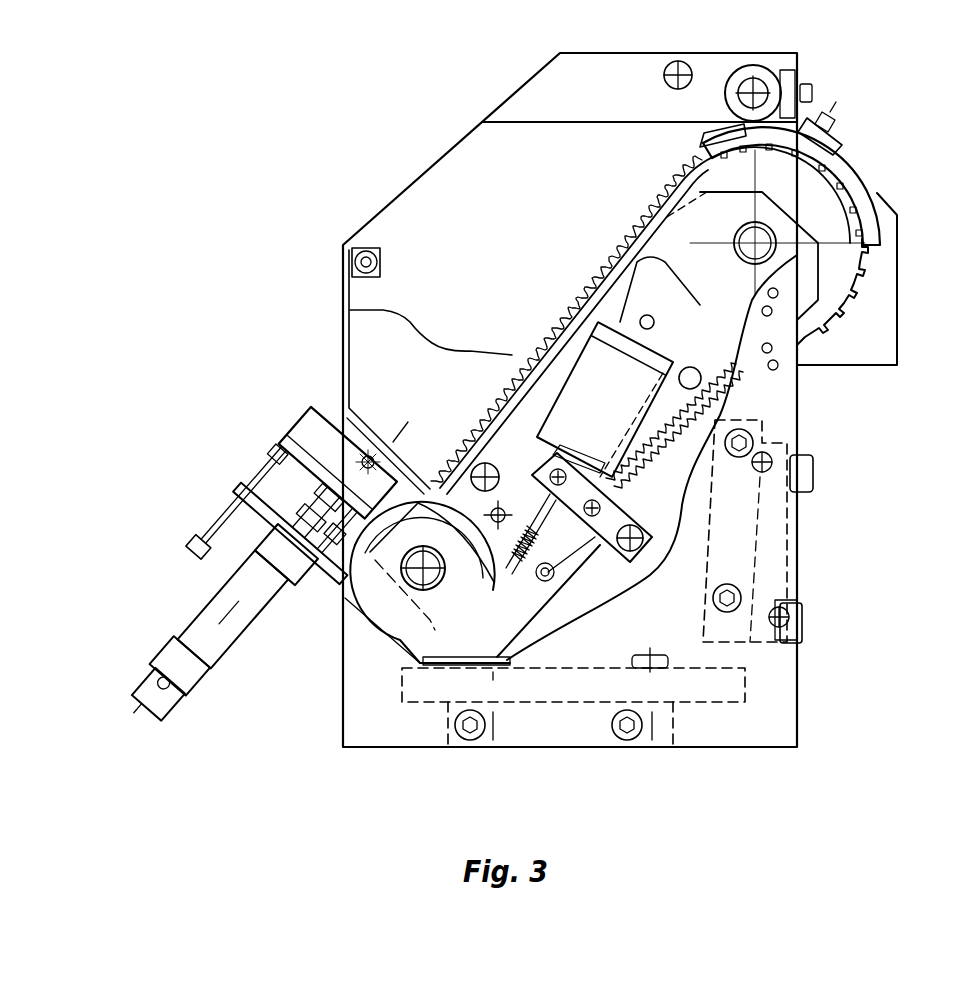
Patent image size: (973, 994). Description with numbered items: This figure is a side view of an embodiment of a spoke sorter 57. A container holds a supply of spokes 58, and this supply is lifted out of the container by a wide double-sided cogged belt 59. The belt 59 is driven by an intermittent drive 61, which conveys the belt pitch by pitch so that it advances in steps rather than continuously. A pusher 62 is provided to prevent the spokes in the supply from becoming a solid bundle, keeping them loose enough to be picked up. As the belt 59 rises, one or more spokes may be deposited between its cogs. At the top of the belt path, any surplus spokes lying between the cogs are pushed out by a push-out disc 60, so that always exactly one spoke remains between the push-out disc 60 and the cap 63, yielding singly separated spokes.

The spoke sorter 57 is at (364, 162).
The supply of spokes 58 is at (382, 367).
The wide double-sided cogged belt 59 is at (550, 332).
The push-out disc 60 is at (843, 277).
The intermittent drive 61 is at (623, 333).
The pusher 62 is at (320, 432).
The cap 63 is at (866, 187).